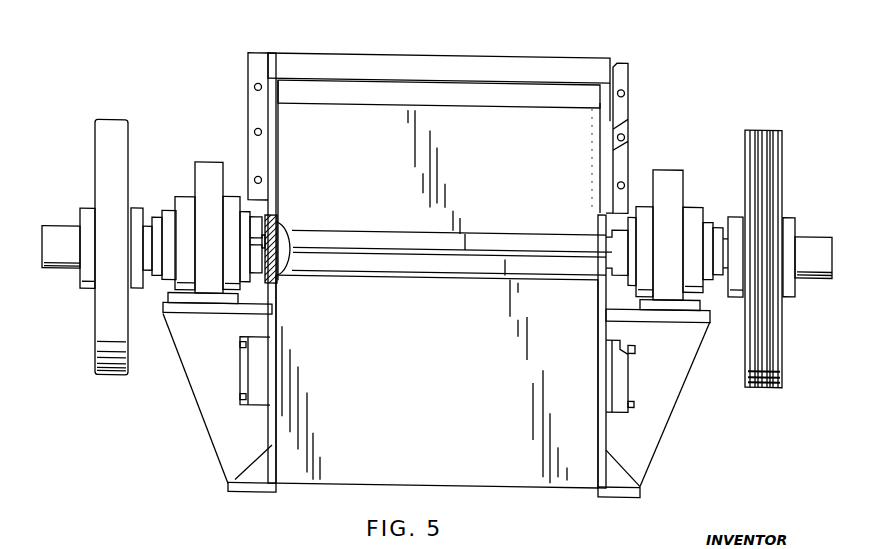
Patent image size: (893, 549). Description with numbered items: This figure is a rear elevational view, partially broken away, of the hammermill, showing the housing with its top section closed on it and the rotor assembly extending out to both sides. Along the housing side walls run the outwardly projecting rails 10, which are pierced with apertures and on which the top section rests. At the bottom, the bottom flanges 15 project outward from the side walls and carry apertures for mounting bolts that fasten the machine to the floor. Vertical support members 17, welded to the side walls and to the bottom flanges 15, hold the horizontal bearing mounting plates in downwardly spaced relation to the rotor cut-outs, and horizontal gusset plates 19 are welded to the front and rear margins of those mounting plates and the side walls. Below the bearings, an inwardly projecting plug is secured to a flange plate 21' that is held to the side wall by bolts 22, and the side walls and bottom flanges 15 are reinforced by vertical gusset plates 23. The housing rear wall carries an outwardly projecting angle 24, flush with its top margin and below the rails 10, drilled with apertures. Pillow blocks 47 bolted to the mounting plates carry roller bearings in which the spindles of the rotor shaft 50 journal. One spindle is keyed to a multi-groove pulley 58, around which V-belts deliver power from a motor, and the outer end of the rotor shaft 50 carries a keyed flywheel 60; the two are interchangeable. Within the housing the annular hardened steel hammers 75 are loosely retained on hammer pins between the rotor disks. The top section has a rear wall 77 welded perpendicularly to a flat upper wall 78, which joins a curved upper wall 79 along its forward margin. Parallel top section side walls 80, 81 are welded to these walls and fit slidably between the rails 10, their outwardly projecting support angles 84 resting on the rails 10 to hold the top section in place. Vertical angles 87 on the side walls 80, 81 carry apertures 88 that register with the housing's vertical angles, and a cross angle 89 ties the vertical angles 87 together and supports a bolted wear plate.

The rails 10 is at (590, 270).
The bottom flanges 15 is at (246, 490).
The vertical support members 17 is at (652, 460).
The horizontal gusset plates 19 is at (680, 313).
The flange plate 21' is at (638, 376).
The bolts 22 is at (636, 342).
The vertical gusset plates 23 is at (240, 472).
The angle 24 is at (405, 273).
The pillow blocks 47 is at (195, 187).
The rotor shaft 50 is at (62, 225).
The multi-groove pulley 58 is at (777, 121).
The flywheel 60 is at (93, 120).
The hammers 75 is at (611, 111).
The rear wall 77 is at (593, 149).
The flat upper wall 78 is at (413, 94).
The curved upper wall 79 is at (530, 76).
The top section side wall 80 is at (613, 139).
The top section side wall 81 is at (270, 149).
The support angles 84 is at (280, 216).
The vertical angles 87 is at (628, 88).
The apertures 88 is at (253, 122).
The cross angle 89 is at (322, 47).